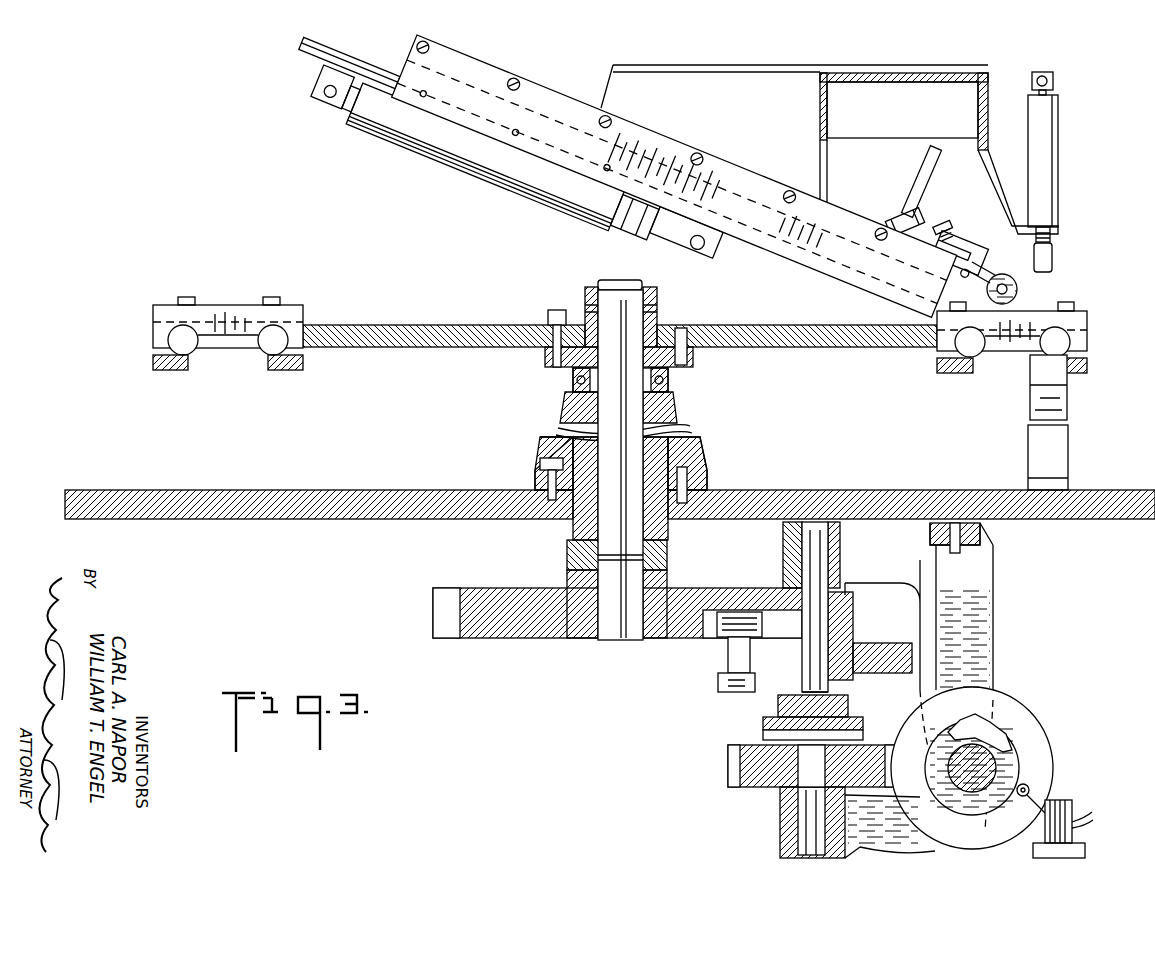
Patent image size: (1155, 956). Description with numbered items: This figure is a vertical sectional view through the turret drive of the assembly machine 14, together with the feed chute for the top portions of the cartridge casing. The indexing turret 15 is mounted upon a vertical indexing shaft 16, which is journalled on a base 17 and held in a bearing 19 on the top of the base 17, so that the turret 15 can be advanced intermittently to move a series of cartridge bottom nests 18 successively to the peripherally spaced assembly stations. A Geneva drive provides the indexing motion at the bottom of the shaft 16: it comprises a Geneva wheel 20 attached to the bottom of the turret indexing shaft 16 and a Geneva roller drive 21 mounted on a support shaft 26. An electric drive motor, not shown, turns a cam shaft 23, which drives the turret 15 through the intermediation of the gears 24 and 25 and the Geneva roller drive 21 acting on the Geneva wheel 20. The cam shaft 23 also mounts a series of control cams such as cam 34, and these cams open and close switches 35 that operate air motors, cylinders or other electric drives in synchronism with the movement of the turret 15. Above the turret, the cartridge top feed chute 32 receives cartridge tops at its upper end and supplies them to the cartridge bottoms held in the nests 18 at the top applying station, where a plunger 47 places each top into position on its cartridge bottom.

The machine 14 is at (1088, 213).
The indexing turret 15 is at (432, 322).
The vertical indexing shaft 16 is at (628, 482).
The base 17 is at (750, 492).
The cartridge bottom nest 18 is at (1087, 368).
The bearing 19 is at (660, 482).
The Geneva wheel 20 is at (510, 640).
The Geneva roller drive 21 is at (735, 654).
The cam shaft 23 is at (958, 788).
The gear 24 is at (1047, 747).
The gear 25 is at (866, 755).
The support shaft 26 is at (805, 668).
The cartridge top feed chute 32 is at (707, 203).
The cam 34 is at (1003, 730).
The switch 35 is at (1073, 808).
The plunger 47 is at (1053, 262).